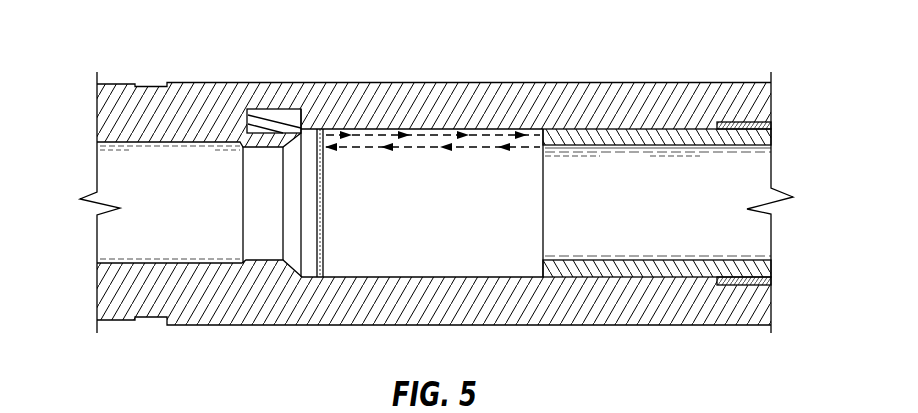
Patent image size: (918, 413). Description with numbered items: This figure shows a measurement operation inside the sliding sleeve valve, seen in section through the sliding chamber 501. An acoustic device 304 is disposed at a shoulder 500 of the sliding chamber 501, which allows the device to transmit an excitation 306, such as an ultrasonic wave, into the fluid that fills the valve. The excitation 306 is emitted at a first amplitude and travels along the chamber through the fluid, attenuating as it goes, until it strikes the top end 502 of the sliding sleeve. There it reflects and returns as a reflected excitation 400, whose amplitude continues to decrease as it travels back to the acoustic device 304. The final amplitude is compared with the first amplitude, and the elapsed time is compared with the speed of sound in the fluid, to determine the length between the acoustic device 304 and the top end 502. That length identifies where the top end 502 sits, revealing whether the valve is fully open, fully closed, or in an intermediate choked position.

The acoustic device 304 is at (274, 104).
The shoulder 500 is at (324, 119).
The excitation 306 is at (447, 133).
The top end 502 is at (538, 133).
The reflected excitation 400 is at (405, 148).
The sliding chamber 501 is at (423, 278).